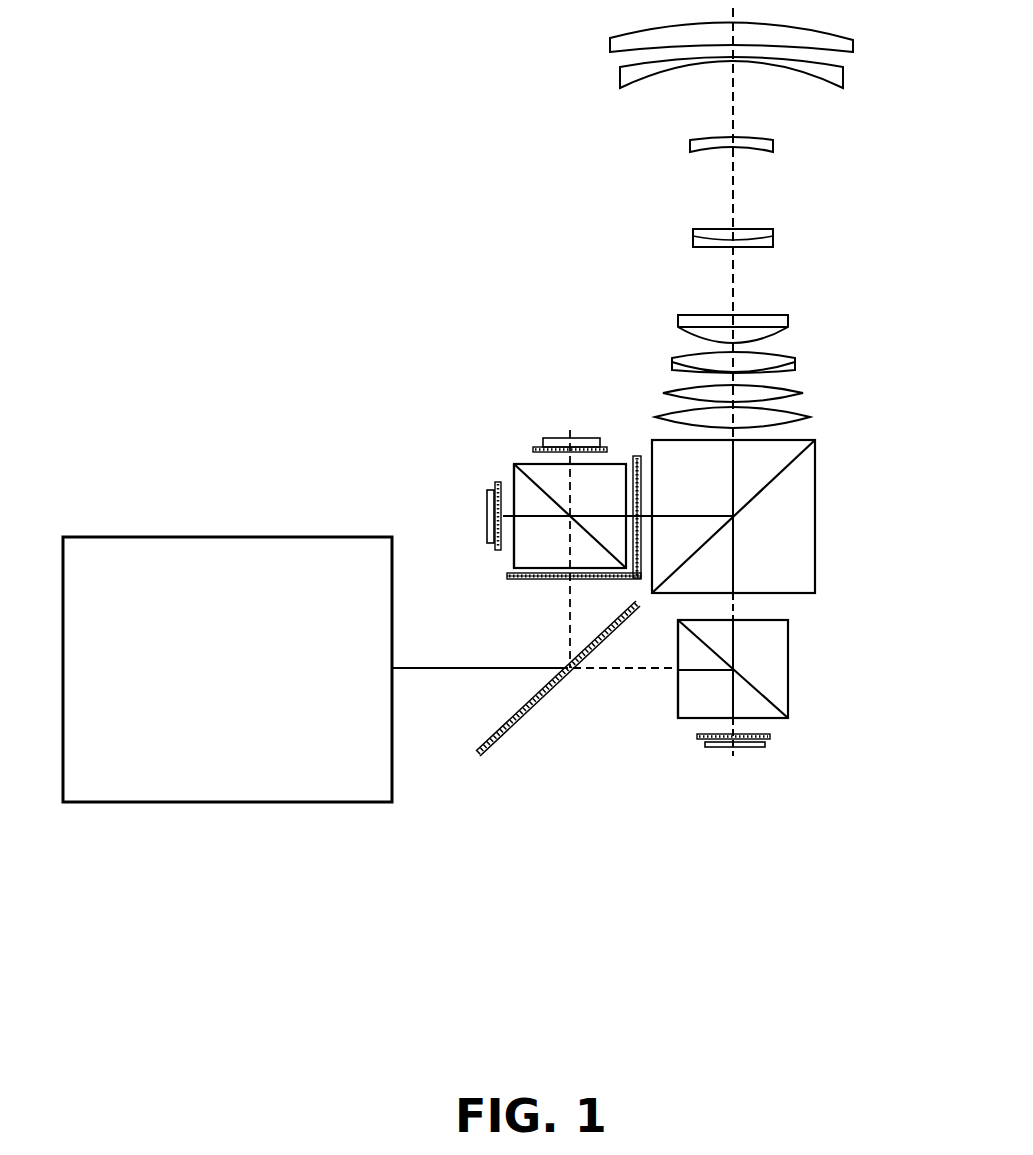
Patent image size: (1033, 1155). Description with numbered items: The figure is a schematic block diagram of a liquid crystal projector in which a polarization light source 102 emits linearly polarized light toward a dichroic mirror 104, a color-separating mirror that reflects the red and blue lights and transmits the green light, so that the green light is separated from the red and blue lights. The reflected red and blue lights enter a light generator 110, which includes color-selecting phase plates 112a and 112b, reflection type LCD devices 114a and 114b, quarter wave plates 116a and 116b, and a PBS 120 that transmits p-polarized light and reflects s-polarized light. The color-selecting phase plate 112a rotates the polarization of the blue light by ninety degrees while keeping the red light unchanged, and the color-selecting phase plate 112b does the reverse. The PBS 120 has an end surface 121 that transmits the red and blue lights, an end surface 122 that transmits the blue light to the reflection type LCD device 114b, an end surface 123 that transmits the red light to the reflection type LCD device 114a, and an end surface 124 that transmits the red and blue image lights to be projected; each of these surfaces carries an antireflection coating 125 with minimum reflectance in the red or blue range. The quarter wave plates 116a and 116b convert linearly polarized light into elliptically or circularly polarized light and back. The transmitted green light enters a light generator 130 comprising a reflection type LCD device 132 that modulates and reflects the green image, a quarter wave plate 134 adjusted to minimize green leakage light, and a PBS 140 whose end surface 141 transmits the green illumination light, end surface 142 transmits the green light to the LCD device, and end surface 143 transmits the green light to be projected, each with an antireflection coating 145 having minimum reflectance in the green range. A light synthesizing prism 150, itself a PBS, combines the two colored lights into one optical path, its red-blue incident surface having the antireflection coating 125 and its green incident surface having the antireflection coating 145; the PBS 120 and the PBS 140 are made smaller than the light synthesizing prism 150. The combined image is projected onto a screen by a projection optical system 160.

The polarization light source 102 is at (127, 579).
The dichroic mirror 104 is at (512, 727).
The light generator 110 is at (388, 275).
The color-selecting phase plate 112a is at (510, 577).
The color-selecting phase plate 112b is at (637, 470).
The reflection type LCD device 114a is at (487, 532).
The reflection type LCD device 114b is at (542, 438).
The 1/4 wave plate 116a is at (496, 483).
The 1/4 wave plate 116b is at (602, 448).
The PBS 120 is at (531, 471).
The end surface 121 is at (510, 568).
The end surface 122 is at (533, 463).
The end surface 123 is at (514, 476).
The end surface 124 is at (632, 572).
The antireflection coating 125 is at (525, 450).
The light generator 130 is at (697, 878).
The reflection type LCD device 132 is at (760, 749).
The 1/4 wave plate 134 is at (770, 737).
The PBS 140 is at (785, 687).
The end surface 141 is at (678, 702).
The end surface 142 is at (692, 720).
The end surface 143 is at (762, 617).
The antireflection coating 145 is at (743, 698).
The light synthesizing prism 150 is at (795, 500).
The projection optical system 160 is at (678, 258).